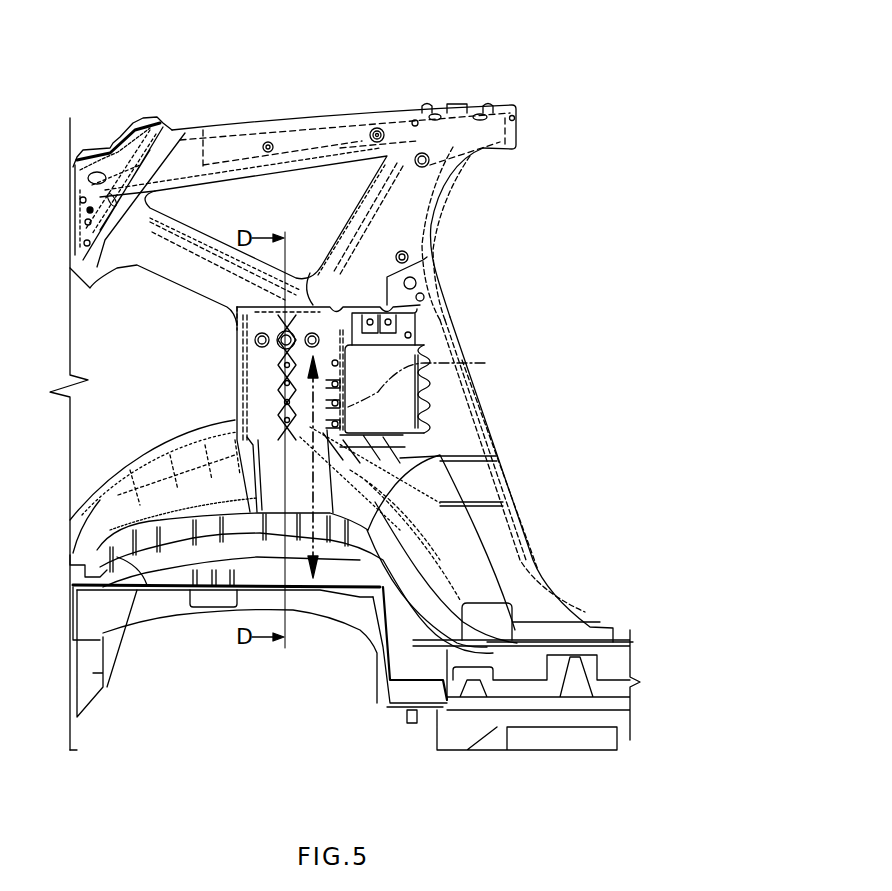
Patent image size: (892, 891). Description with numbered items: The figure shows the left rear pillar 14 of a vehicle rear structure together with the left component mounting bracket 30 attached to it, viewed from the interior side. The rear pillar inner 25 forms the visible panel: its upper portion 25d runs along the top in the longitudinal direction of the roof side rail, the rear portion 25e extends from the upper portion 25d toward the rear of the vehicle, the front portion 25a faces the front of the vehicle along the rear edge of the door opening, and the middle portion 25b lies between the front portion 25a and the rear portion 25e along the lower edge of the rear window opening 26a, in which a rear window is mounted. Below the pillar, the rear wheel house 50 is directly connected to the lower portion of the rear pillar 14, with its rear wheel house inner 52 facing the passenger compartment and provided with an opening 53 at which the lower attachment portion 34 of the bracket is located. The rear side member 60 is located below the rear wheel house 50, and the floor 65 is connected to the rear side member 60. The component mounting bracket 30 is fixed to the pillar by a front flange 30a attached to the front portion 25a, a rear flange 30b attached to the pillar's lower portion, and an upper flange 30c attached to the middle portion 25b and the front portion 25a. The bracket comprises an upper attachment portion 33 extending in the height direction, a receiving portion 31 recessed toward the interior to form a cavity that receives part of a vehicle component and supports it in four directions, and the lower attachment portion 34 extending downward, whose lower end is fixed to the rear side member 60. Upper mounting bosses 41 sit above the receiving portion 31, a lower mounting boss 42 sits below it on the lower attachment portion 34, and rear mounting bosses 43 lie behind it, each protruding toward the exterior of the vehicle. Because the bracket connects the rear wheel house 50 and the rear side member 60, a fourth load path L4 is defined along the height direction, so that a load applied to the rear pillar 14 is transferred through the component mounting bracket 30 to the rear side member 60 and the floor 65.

The rear pillar 14 is at (505, 240).
The rear pillar inner 25 is at (320, 100).
The front portion 25a is at (500, 434).
The middle portion 25b is at (355, 193).
The upper portion 25d is at (240, 133).
The rear portion 25e is at (80, 283).
The rear window opening 26a is at (277, 206).
The component mounting bracket 30 is at (225, 360).
The front flange 30a is at (428, 390).
The rear flange 30b is at (240, 382).
The upper flange 30c is at (310, 275).
The receiving portion 31 is at (395, 353).
The upper attachment portion 33 is at (240, 331).
The lower attachment portion 34 is at (253, 480).
The upper mounting boss 41 is at (372, 320).
The lower mounting boss 42 is at (400, 458).
The rear mounting boss 43 is at (287, 400).
The rear wheel house 50 is at (103, 472).
The rear wheel house inner 52 is at (178, 465).
The opening 53 is at (375, 502).
The rear side member 60 is at (167, 615).
The floor 65 is at (103, 557).
The fourth load path L4 is at (432, 379).